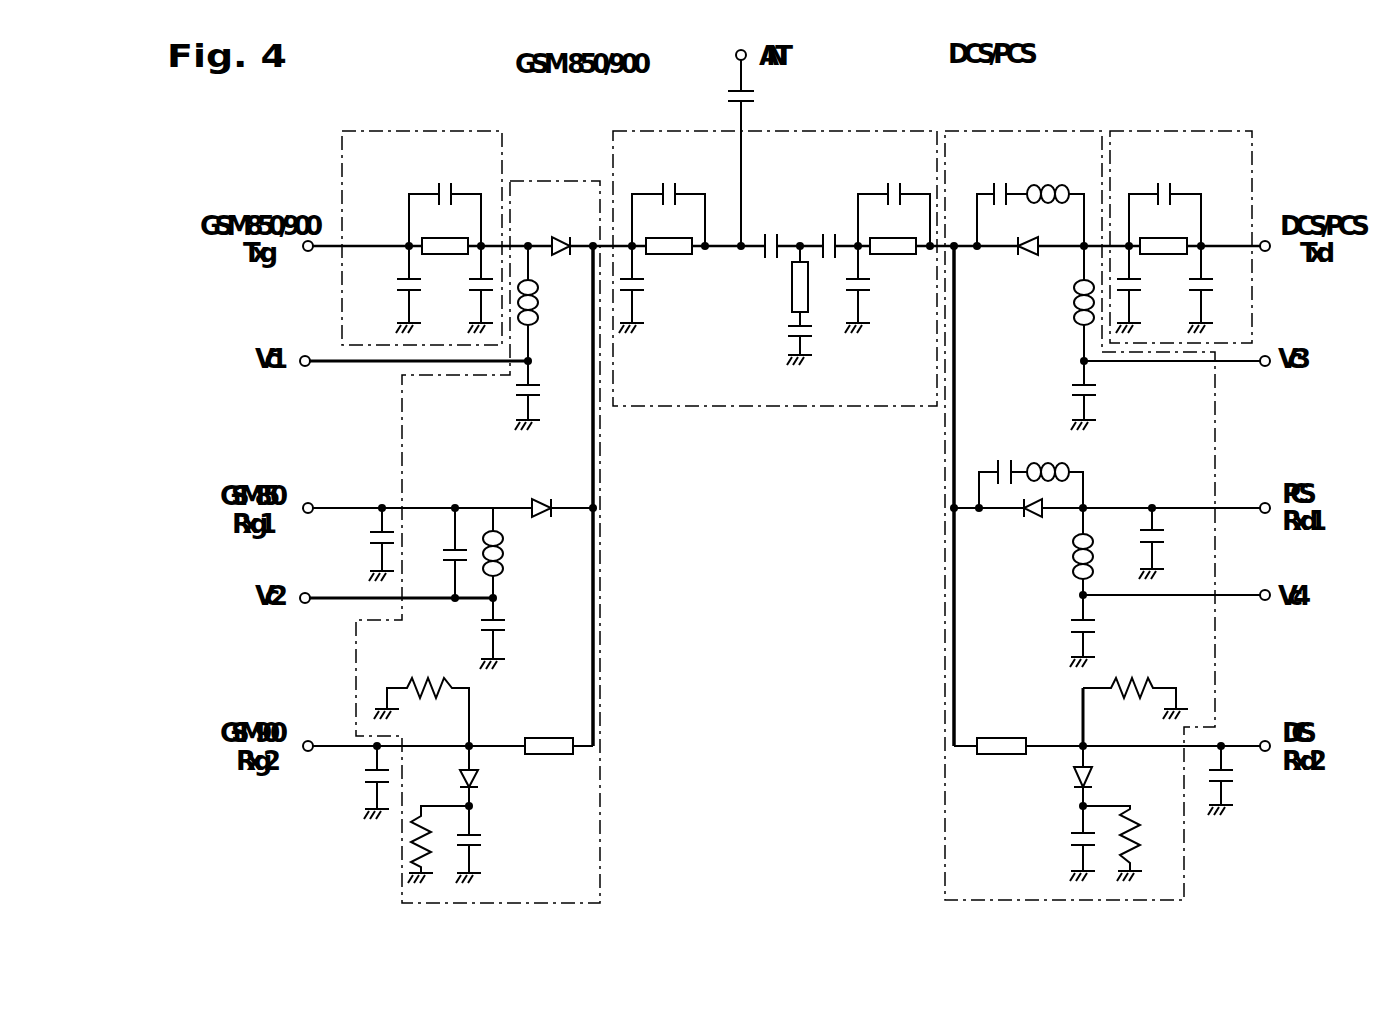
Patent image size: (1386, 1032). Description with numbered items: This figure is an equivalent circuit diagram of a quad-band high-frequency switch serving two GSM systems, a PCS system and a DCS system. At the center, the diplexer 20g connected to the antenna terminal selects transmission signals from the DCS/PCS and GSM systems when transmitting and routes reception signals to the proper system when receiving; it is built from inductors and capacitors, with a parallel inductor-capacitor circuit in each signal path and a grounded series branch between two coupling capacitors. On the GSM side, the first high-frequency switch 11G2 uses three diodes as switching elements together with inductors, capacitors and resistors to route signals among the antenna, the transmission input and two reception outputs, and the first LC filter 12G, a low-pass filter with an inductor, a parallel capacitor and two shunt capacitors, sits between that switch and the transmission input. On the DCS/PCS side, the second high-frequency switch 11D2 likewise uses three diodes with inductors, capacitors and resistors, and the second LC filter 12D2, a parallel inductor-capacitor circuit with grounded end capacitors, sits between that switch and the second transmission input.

The first LC filter 12G is at (413, 130).
The first high-frequency switch 11G2 is at (555, 180).
The diplexer 20g is at (847, 130).
The second high-frequency switch 11D2 is at (1075, 130).
The second LC filter 12D2 is at (1183, 130).